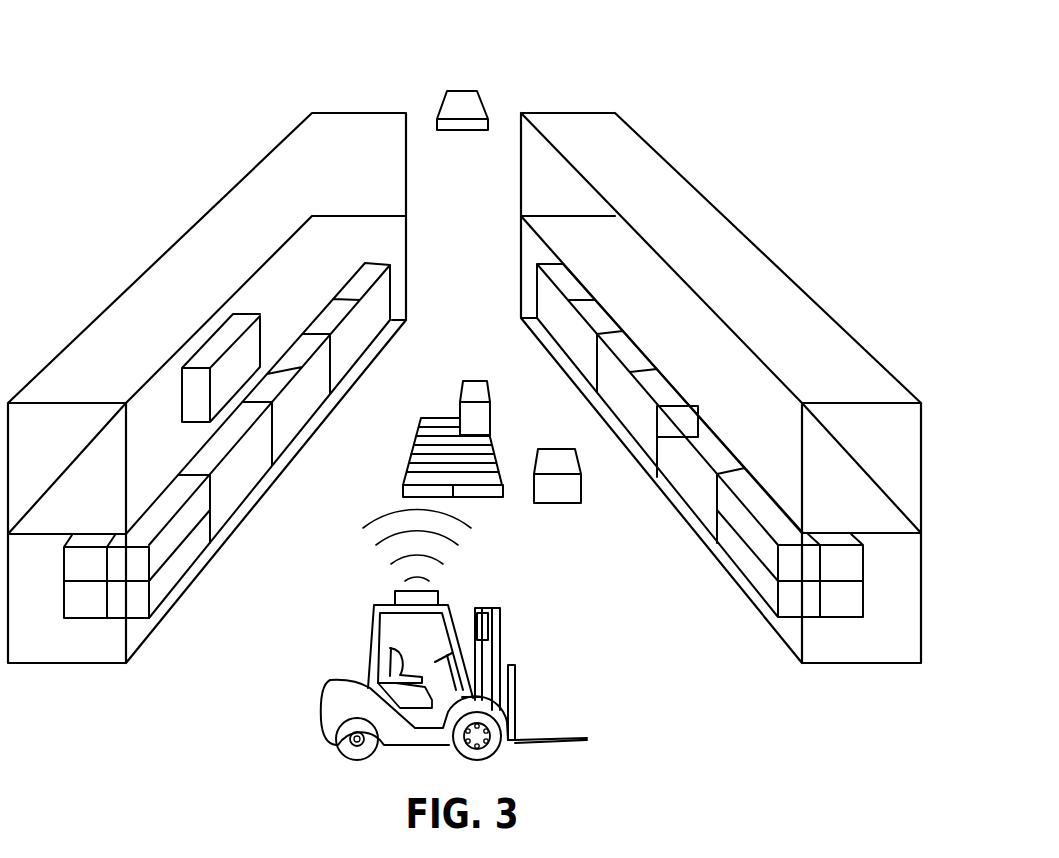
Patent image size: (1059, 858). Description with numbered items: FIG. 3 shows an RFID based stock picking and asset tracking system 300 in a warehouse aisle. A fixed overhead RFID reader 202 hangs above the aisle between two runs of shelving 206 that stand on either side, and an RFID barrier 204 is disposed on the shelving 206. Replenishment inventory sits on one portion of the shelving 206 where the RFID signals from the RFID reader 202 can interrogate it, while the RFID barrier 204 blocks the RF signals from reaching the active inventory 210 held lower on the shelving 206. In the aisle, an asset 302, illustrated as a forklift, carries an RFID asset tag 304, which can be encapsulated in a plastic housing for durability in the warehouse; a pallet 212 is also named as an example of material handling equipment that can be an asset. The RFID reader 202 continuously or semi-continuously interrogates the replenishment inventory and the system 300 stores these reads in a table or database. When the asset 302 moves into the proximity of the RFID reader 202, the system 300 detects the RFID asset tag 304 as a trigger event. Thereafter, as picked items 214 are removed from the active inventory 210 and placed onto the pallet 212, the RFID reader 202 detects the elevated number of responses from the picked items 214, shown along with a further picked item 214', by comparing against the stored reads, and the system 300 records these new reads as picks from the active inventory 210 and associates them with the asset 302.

The RFID based stock picking and asset tracking system 300 is at (682, 35).
The fixed overhead RFID reader 202 is at (462, 91).
The RFID barrier 204 is at (302, 293).
The shelving 206 is at (254, 163).
The active inventory 210 is at (246, 492).
The pallet 212 is at (487, 498).
The picked items 214 is at (469, 375).
The item 214' is at (553, 450).
The asset 302 is at (372, 625).
The RFID asset tag 304 is at (397, 588).